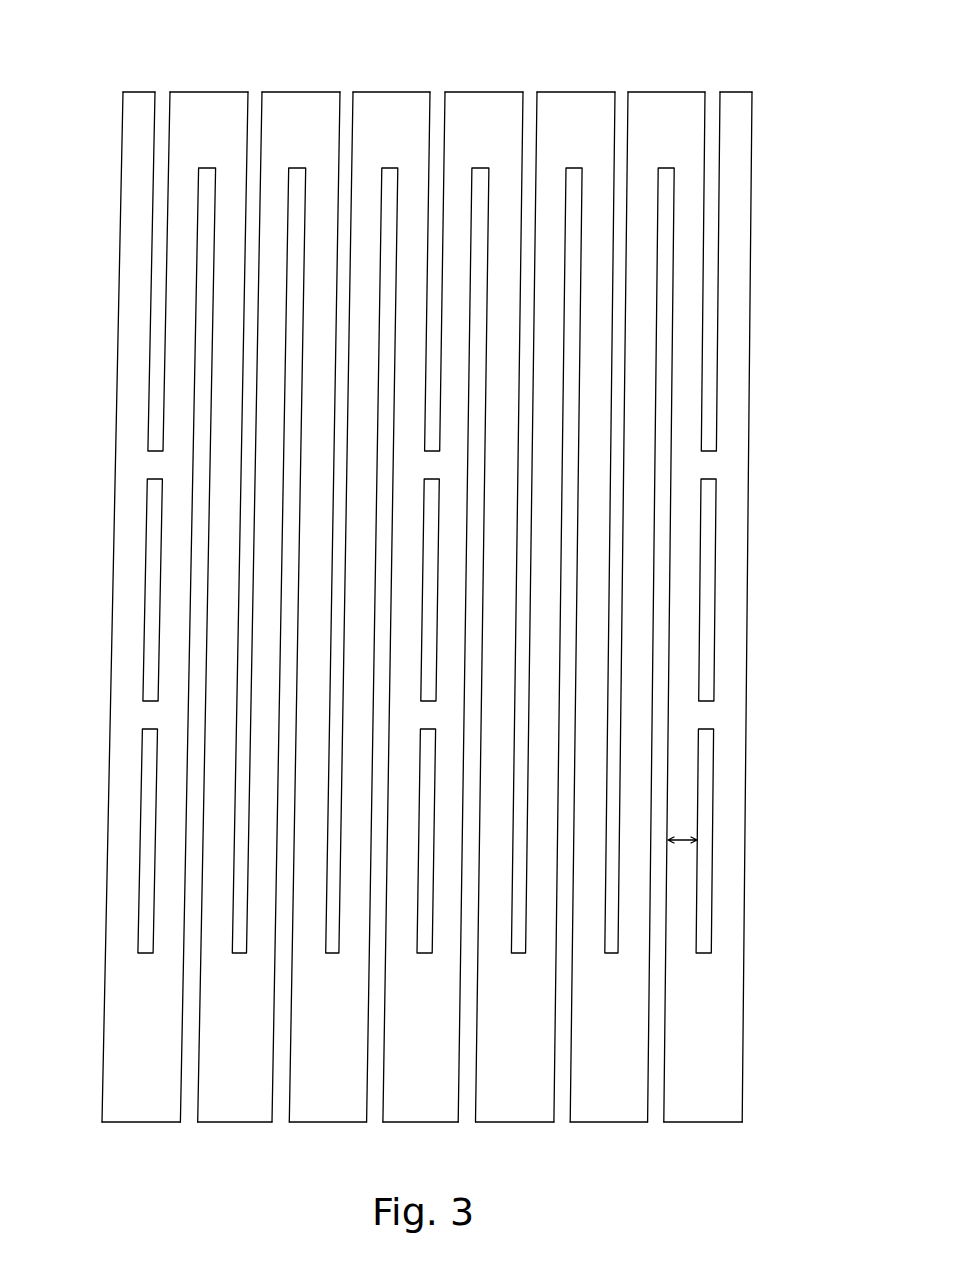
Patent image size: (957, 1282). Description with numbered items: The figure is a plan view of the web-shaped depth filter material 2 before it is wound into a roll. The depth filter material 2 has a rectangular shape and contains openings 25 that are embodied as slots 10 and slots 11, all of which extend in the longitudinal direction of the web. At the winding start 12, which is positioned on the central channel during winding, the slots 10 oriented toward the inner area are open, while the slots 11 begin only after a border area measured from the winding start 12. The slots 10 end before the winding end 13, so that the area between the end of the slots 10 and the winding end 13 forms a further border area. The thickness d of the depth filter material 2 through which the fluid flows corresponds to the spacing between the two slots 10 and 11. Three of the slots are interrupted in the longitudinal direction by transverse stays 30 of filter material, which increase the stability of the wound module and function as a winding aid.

The depth filter material 2 is at (127, 451).
The slots 10 is at (620, 282).
The slots 11 is at (572, 433).
The winding start 12 is at (123, 92).
The winding end 13 is at (102, 1122).
The openings 25 is at (390, 175).
The stays 30 is at (148, 713).
The thickness d is at (685, 840).